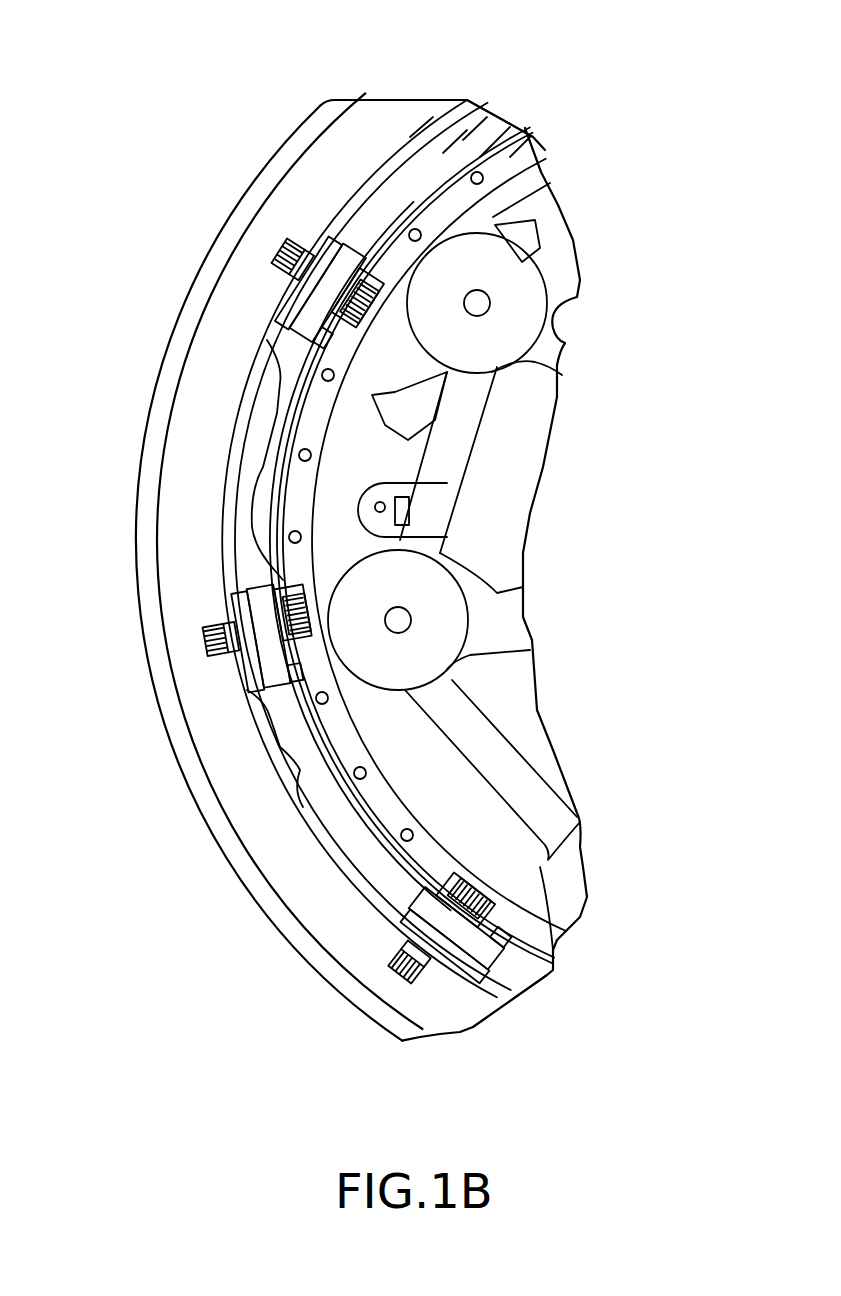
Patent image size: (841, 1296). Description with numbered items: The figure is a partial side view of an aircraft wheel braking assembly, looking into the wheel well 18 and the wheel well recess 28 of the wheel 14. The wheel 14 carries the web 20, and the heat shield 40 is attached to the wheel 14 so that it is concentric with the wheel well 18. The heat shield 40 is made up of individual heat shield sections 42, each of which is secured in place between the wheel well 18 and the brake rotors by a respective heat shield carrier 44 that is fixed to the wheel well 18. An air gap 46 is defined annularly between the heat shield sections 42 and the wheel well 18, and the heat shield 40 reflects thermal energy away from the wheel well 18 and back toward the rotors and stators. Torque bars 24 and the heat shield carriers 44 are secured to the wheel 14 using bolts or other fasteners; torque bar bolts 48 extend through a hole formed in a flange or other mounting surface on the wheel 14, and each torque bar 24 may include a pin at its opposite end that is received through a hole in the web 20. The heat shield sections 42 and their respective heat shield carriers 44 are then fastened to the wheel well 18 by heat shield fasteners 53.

The wheel 14 is at (272, 106).
The wheel well 18 is at (473, 117).
The web 20 is at (457, 539).
The torque bar 24 is at (335, 320).
The wheel well recess 28 is at (365, 460).
The heat shield 40 is at (522, 109).
The heat shield section 42 is at (530, 148).
The heat shield carrier 44 is at (313, 340).
The air gap 46 is at (420, 185).
The torque bar bolt 48 is at (275, 250).
The heat shield fastener 53 is at (453, 100).